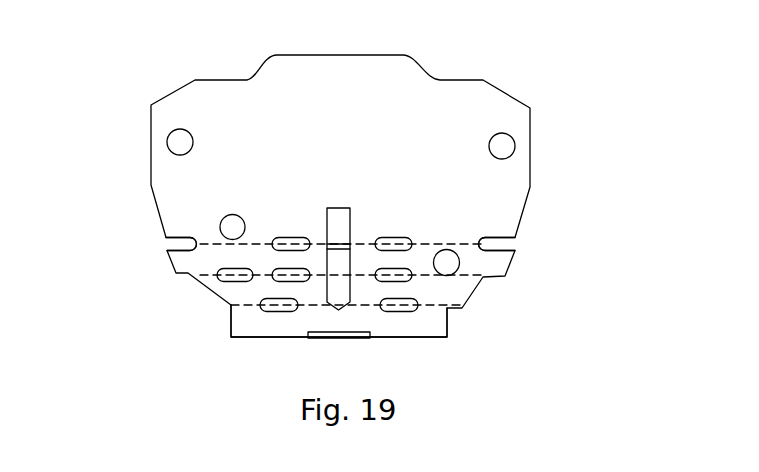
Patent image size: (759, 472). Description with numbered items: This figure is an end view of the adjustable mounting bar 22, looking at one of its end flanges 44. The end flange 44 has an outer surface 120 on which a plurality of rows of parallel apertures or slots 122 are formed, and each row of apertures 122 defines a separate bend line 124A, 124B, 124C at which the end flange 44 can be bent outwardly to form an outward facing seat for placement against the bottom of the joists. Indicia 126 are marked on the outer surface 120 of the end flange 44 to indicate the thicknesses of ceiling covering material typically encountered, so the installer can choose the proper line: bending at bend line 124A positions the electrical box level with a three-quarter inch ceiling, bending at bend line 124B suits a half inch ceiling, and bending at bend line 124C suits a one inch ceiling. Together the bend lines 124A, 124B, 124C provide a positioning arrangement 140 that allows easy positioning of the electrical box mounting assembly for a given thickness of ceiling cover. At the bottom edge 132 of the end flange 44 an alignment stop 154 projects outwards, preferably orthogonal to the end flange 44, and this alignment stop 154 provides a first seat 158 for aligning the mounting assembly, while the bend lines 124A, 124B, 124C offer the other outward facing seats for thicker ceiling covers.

The adjustable mounting bar 22 is at (391, 219).
The end flange 44 is at (532, 123).
The outer surface 120 is at (495, 204).
The apertures or slots 122 is at (183, 243).
The bend line A 124A is at (463, 308).
The bend line B 124B is at (483, 277).
The bend line C 124C is at (512, 251).
The indicia 126 is at (440, 100).
The bottom edge 132 is at (412, 338).
The positioning arrangement 140 is at (458, 271).
The alignment stop 154 is at (338, 336).
The first seat 158 is at (318, 310).